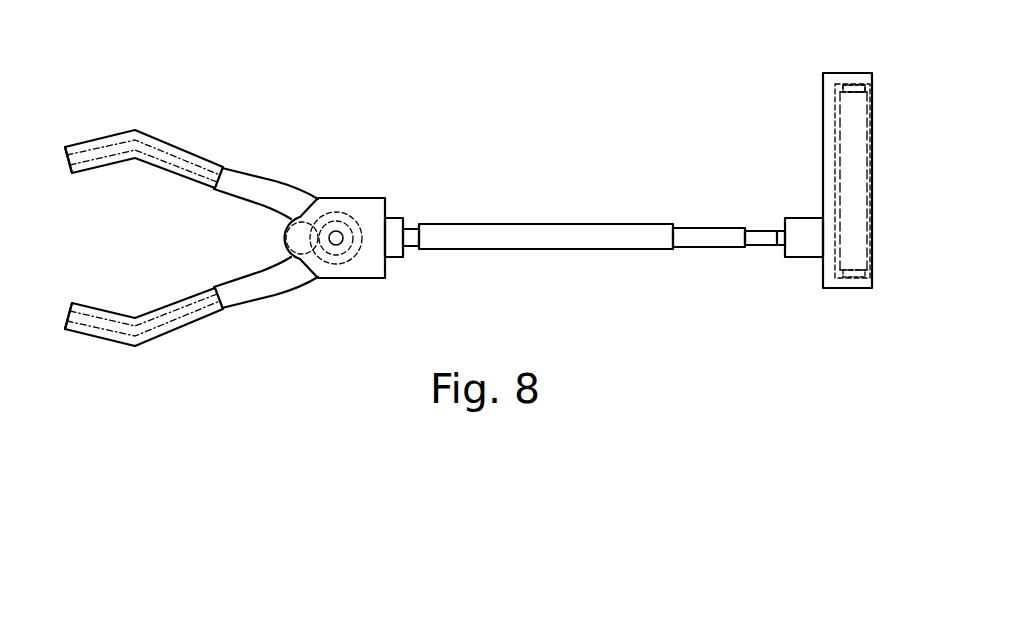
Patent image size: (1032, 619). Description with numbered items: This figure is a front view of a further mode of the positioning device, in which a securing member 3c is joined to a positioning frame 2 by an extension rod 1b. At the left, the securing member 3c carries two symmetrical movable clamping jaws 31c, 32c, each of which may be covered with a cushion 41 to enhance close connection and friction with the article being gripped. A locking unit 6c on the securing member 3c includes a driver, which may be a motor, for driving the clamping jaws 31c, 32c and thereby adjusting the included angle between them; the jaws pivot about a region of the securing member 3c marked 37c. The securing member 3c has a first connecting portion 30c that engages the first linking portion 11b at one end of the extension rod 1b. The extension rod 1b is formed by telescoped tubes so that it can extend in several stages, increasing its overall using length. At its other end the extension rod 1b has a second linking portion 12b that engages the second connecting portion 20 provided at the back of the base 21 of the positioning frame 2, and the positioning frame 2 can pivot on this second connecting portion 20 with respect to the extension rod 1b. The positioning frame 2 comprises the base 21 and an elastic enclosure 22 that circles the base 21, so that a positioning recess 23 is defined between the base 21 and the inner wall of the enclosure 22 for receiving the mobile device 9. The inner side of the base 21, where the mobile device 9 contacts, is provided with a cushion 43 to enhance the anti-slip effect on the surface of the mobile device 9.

The cushion 41 is at (94, 139).
The clamping jaw 31c is at (163, 147).
The clamping jaw 32c is at (168, 326).
The locking unit 6c is at (342, 200).
The pivot bearing 37c is at (360, 221).
The securing member 3c is at (349, 292).
The first connecting portion 30c is at (394, 230).
The first linking portion 11b is at (413, 247).
The extension rod 1b is at (611, 212).
The second linking portion 12b is at (783, 242).
The second connecting portion 20 is at (802, 226).
The base 21 is at (830, 148).
The elastic enclosure 22 is at (853, 78).
The positioning recess 23 is at (872, 95).
The cushion 43 is at (841, 84).
The mobile device 9 is at (871, 253).
The positioning frame 2 is at (833, 300).